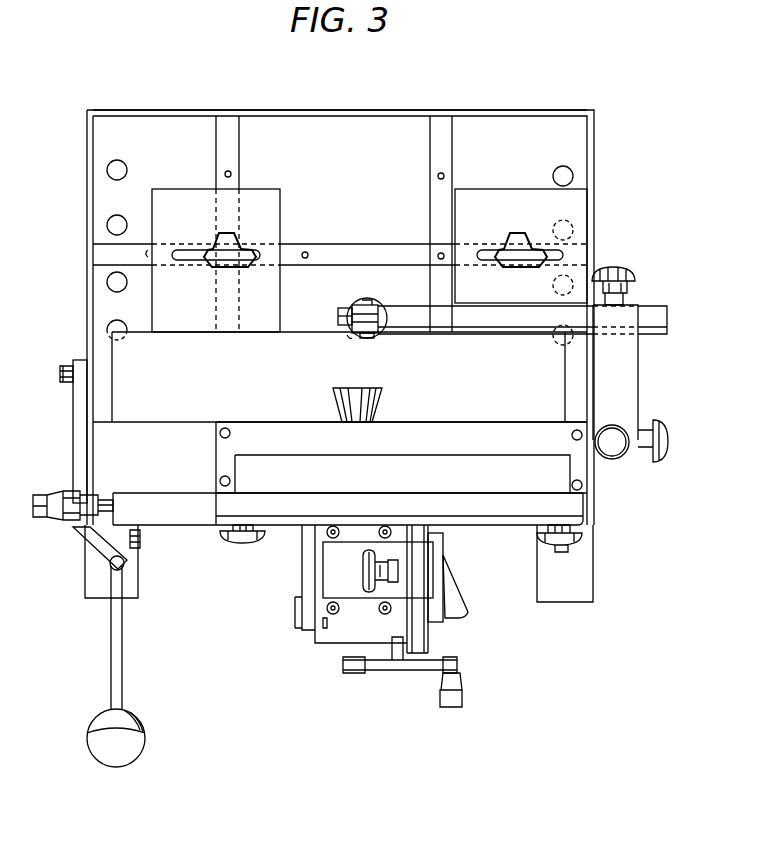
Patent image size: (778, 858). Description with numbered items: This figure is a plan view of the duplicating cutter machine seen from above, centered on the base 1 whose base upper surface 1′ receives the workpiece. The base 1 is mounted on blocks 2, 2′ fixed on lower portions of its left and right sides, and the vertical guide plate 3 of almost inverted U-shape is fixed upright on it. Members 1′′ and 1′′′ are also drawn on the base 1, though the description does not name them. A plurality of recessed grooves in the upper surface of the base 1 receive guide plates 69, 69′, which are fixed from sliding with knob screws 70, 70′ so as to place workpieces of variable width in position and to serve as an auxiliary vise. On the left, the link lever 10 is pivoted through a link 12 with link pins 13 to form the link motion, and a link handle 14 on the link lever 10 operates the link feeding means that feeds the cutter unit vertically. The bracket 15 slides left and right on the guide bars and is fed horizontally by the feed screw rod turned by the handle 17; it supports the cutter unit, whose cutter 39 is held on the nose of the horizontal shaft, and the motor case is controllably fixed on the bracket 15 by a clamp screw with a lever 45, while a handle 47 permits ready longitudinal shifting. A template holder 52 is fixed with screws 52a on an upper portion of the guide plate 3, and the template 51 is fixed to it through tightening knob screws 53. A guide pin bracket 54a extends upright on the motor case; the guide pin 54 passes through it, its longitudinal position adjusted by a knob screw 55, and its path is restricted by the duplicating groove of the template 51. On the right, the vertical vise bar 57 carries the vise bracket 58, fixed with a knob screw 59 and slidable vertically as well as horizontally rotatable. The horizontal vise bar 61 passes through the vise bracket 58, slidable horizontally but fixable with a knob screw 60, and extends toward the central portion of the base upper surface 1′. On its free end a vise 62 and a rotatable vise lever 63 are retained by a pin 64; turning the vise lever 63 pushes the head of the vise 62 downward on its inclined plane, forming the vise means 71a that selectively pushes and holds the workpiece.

The base 1 is at (492, 110).
The base upper surface 1′ is at (291, 118).
The horizontal cross member 1′′ is at (340, 256).
The vertical members 1′′′ is at (226, 118).
The block 2 is at (85, 580).
The block 2′ is at (570, 604).
The vertical guide plate 3 is at (200, 526).
The link lever 10 is at (80, 540).
The link 12 is at (73, 430).
The link pin 13 is at (60, 374).
The link handle 14 is at (111, 650).
The bracket 15 is at (428, 628).
The handle 17 is at (47, 456).
The cutter 39 is at (356, 388).
The lever 45 is at (455, 590).
The handle 47 is at (462, 683).
The template 51 is at (285, 526).
The template holder 52 is at (216, 453).
The screw 52a is at (220, 433).
The knob screw 53 is at (242, 546).
The guide pin 54 is at (418, 670).
The guide pin bracket 54a is at (436, 558).
The knob screw 55 is at (363, 570).
The vise bar 57 is at (613, 456).
The vise bracket 58 is at (637, 305).
The knob screw 59 is at (656, 430).
The knob screw 60 is at (616, 268).
The vise bar 61 is at (512, 320).
The vise 62 is at (375, 302).
The vise lever 63 is at (338, 318).
The pin 64 is at (365, 299).
The guide plate 69 is at (280, 203).
The guide plate 69′ is at (477, 205).
The knob screw 70 is at (235, 235).
The knob screw 70′ is at (518, 250).
The vise means 71a is at (352, 335).